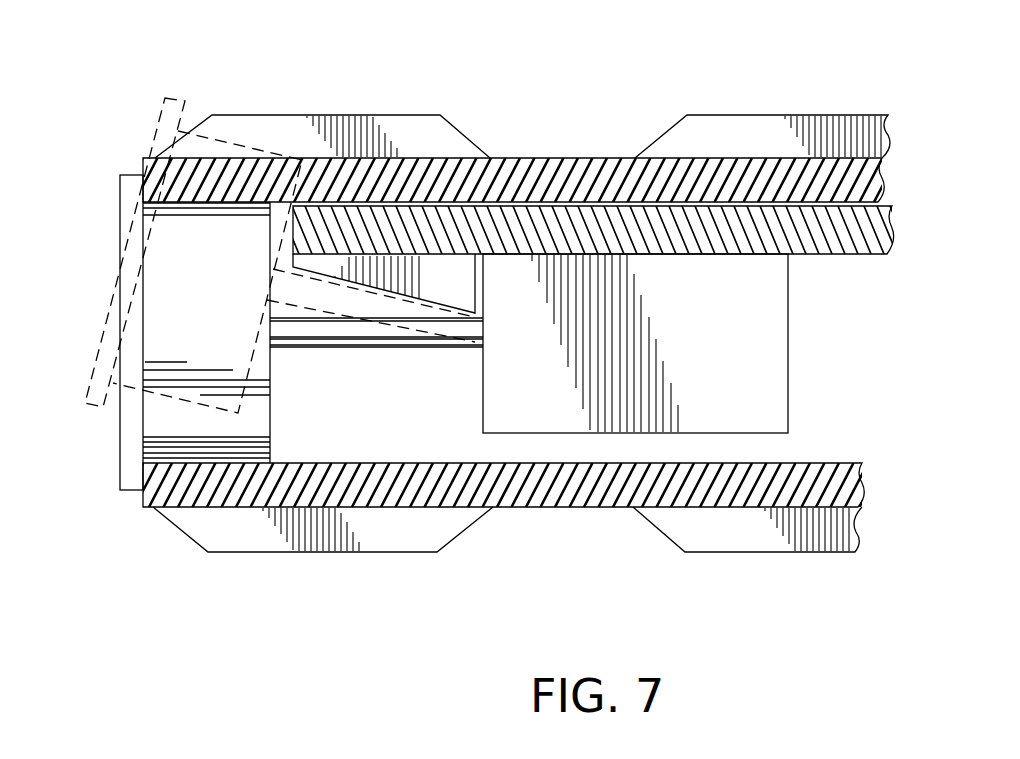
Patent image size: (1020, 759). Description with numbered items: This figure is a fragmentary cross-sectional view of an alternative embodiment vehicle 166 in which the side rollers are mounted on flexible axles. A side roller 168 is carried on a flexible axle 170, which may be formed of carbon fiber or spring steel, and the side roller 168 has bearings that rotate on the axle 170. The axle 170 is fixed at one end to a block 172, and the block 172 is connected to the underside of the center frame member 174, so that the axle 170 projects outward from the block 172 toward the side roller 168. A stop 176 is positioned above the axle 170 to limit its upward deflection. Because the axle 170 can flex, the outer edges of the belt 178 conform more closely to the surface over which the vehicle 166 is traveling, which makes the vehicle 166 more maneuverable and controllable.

The alternative embodiment vehicle 166 is at (580, 101).
The side roller 168 is at (118, 460).
The flexible axle 170 is at (315, 348).
The block 172 is at (788, 368).
The center frame member 174 is at (823, 254).
The stop 176 is at (403, 297).
The belt 178 is at (743, 158).